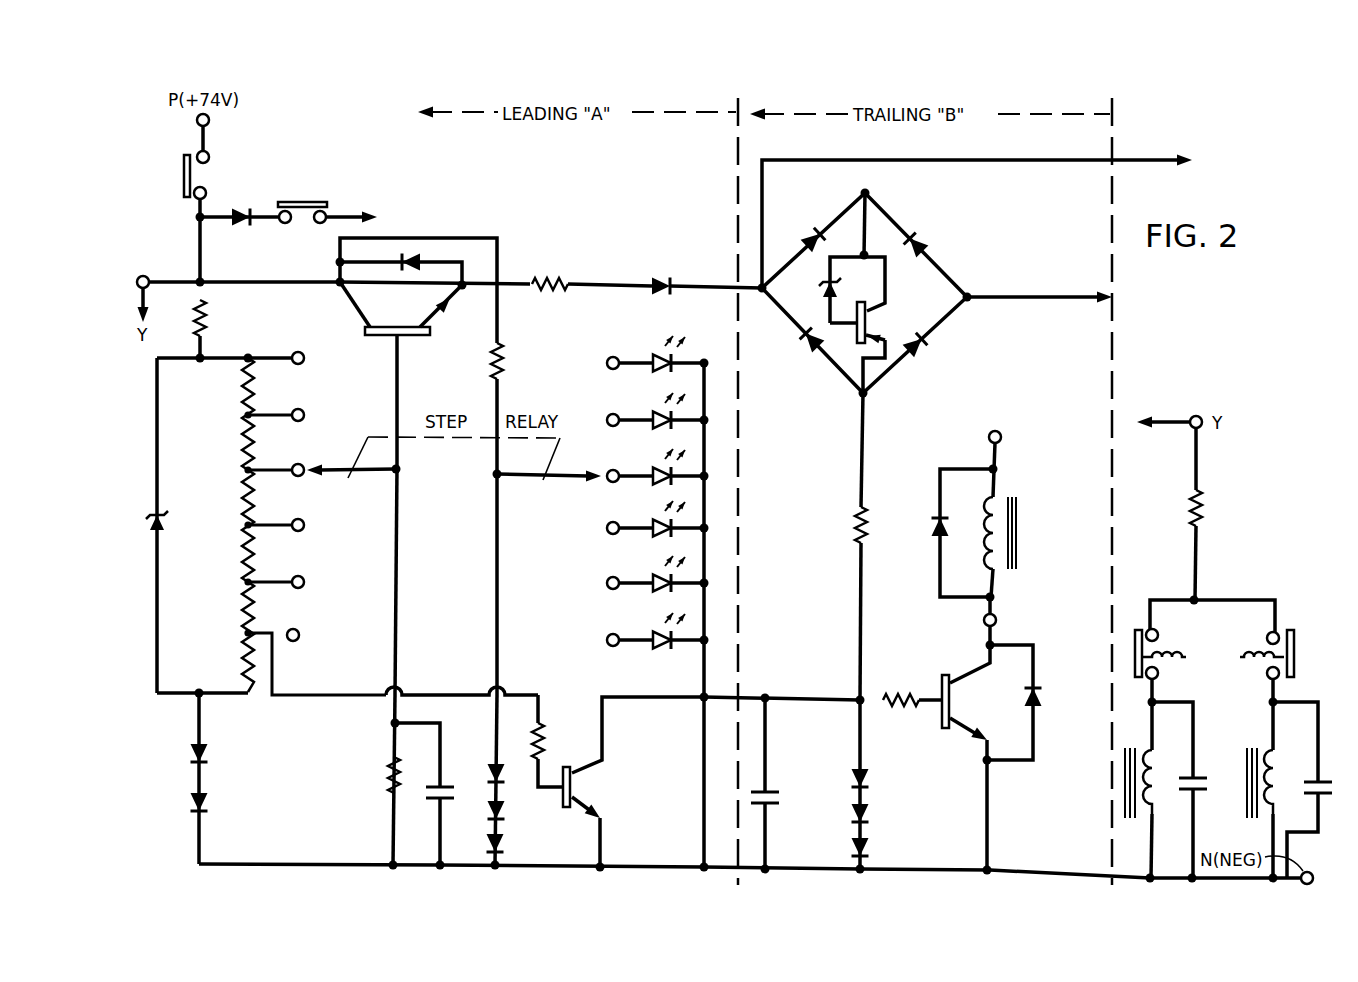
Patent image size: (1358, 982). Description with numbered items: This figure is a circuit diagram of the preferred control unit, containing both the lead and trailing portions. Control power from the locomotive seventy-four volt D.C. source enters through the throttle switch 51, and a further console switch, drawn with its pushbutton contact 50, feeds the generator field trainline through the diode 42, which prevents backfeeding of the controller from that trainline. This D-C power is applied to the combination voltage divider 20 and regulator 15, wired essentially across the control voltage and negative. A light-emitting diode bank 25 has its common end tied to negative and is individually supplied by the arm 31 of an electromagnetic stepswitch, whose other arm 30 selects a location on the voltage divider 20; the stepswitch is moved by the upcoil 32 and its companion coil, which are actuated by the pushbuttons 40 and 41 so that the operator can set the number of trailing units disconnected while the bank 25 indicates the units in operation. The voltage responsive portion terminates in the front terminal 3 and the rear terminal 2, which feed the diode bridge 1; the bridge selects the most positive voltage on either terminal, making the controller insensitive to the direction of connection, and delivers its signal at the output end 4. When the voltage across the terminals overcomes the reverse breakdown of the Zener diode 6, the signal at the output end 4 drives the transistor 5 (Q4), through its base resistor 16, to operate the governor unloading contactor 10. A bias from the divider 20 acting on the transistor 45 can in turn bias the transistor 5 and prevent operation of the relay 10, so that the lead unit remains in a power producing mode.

The diode bridge 1 is at (928, 204).
The rear terminal 2 is at (1067, 163).
The front terminal 3 is at (1035, 295).
The output end of bridge 4 is at (870, 398).
The transistor 5 is at (972, 733).
The Zener diode 6 is at (822, 283).
The governor unloading contactor 10 is at (1003, 571).
The regulator 15 is at (513, 231).
The resistor 16 is at (853, 525).
The voltage divider 20 is at (243, 498).
The light-emitting diode bank 25 is at (706, 498).
The stepswitch arm 30 is at (413, 490).
The stepswitch arm 31 is at (511, 492).
The upcoil 32 is at (1158, 767).
The pushbutton 40 is at (1142, 627).
The pushbutton 41 is at (1290, 626).
The diode 42 is at (238, 208).
The transistor 45 is at (575, 787).
The push button switch 50 is at (304, 202).
The throttle switch 51 is at (183, 176).